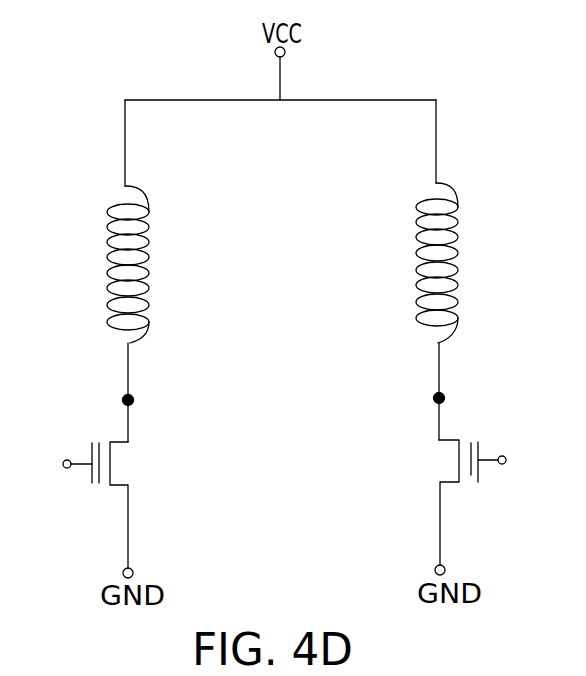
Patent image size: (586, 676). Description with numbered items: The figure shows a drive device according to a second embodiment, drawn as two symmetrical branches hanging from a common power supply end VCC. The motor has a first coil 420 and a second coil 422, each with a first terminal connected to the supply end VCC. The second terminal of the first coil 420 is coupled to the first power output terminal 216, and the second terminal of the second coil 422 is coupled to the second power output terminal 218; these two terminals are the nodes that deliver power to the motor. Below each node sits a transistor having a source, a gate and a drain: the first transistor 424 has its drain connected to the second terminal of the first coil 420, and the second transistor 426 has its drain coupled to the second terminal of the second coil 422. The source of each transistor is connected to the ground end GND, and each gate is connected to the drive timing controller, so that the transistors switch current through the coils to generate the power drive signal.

The first power output terminal 216 is at (131, 397).
The second power output terminal 218 is at (437, 395).
The first coil 420 is at (120, 340).
The second coil 422 is at (447, 350).
The first transistor 424 is at (98, 486).
The second transistor 426 is at (471, 478).